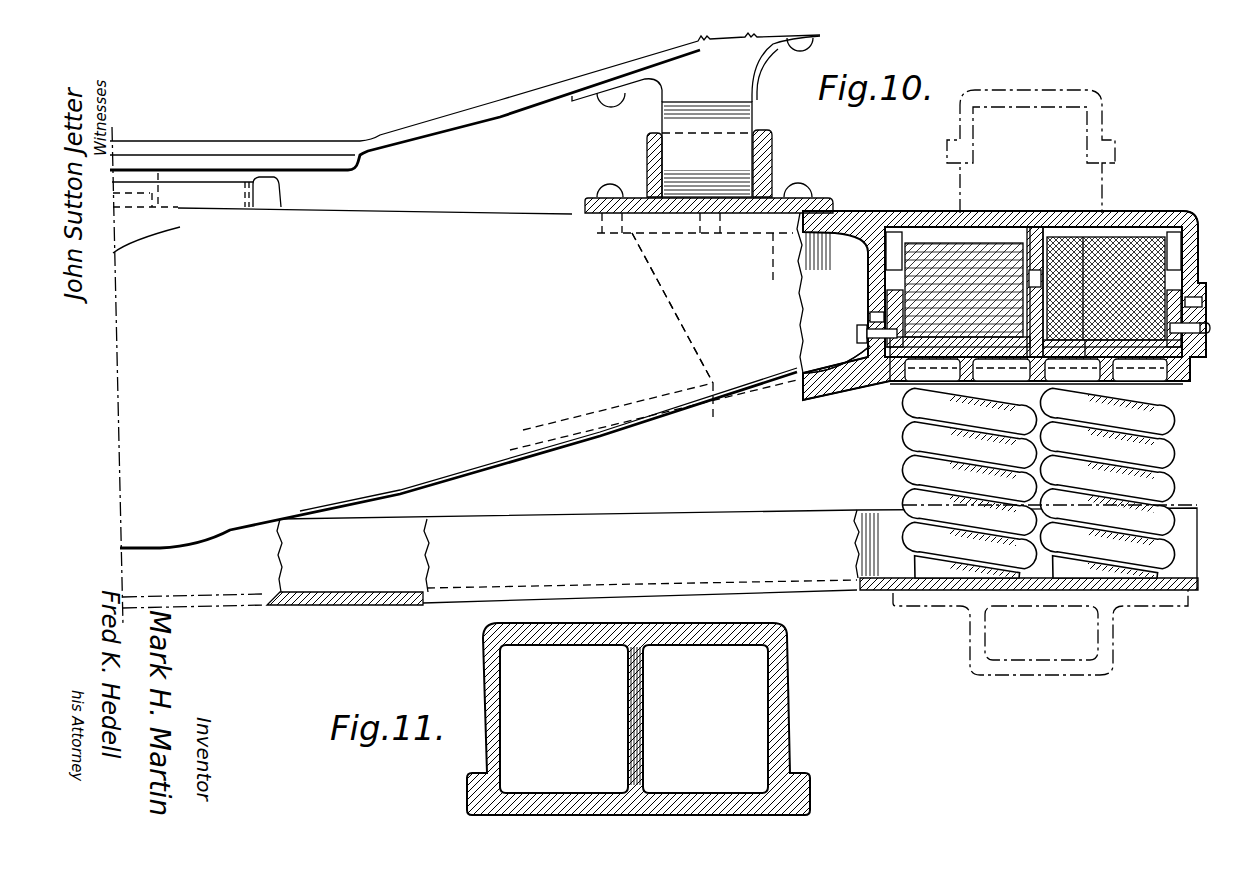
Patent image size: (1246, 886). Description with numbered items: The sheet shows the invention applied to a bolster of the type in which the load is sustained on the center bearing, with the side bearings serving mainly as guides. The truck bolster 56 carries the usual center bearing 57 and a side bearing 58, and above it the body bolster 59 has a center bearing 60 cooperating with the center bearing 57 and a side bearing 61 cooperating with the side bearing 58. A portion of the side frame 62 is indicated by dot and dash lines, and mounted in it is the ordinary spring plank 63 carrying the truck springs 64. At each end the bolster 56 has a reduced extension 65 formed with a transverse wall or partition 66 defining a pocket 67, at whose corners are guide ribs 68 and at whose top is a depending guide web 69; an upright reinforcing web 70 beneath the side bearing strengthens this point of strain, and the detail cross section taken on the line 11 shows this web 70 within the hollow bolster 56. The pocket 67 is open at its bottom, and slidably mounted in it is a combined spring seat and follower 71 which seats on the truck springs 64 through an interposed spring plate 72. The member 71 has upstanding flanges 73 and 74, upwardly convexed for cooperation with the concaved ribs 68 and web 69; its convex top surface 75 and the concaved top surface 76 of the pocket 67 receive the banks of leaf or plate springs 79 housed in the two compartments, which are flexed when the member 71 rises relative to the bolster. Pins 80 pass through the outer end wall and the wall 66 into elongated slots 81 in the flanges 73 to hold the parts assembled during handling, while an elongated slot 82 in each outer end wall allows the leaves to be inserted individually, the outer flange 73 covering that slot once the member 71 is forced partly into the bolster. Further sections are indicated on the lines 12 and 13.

In FIG. 10, the section line 11— 11 is at (813, 178).
In FIG. 10, the section line 12— 12 is at (1075, 747).
In FIG. 10, the section line 13— 13 is at (862, 255).
In FIG. 10, the bolster 56 is at (491, 376).
In FIG. 11, the bolster 56 is at (777, 710).
In FIG. 10, the center bearing 57 is at (272, 192).
In FIG. 10, the side bearing 58 is at (644, 158).
In FIG. 10, the body bolster 59 is at (410, 130).
In FIG. 10, the center bearing 60 is at (227, 171).
In FIG. 10, the side bearing 61 is at (707, 132).
In FIG. 10, the side frame 62 is at (978, 652).
In FIG. 10, the spring plank 63 is at (660, 558).
In FIG. 10, the truck springs 64 is at (912, 498).
In FIG. 10, the reduced extension 65 is at (1190, 212).
In FIG. 10, the transverse wall or partition 66 is at (869, 303).
In FIG. 10, the pocket 67 is at (1124, 236).
In FIG. 10, the guide ribs 68 is at (895, 237).
In FIG. 10, the depending guide web 69 is at (1037, 236).
In FIG. 10, the upright reinforcing web 70 is at (698, 310).
In FIG. 11, the upright reinforcing web 70 is at (644, 720).
In FIG. 10, the combined spring seat and follower 71 is at (1184, 374).
In FIG. 10, the spring plate 72 is at (897, 386).
In FIG. 10, the upstanding flanges 73 is at (872, 317).
In FIG. 10, the upstanding flange 74 is at (1028, 352).
In FIG. 10, the top surface 75 is at (1085, 341).
In FIG. 10, the top surface of pocket 76 is at (1083, 236).
In FIG. 10, the leaf or plate springs 79 is at (974, 266).
In FIG. 10, the pins 80 is at (858, 337).
In FIG. 10, the elongated slots 81 is at (872, 348).
In FIG. 10, the elongated slot 82 is at (1204, 328).